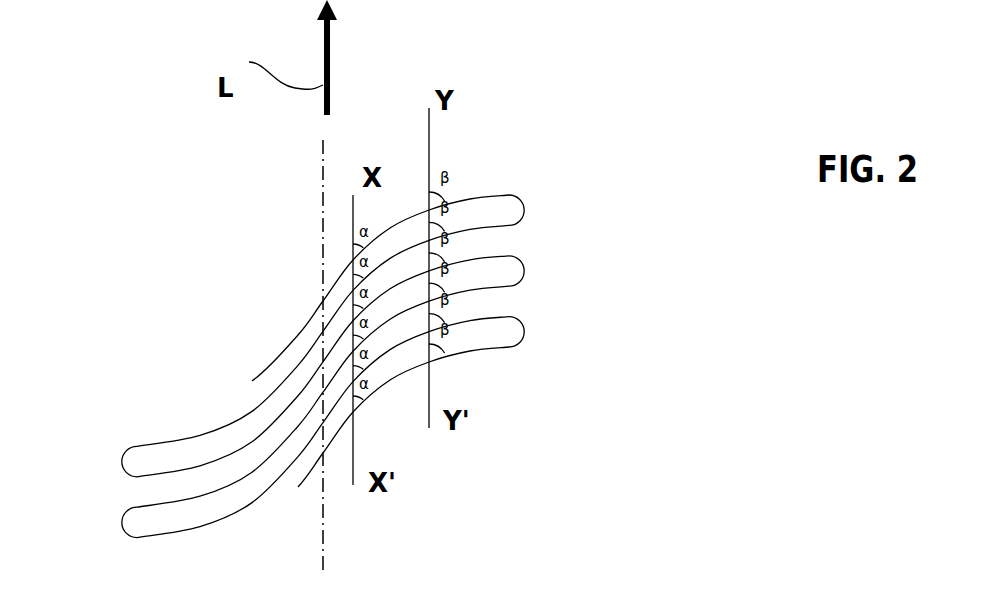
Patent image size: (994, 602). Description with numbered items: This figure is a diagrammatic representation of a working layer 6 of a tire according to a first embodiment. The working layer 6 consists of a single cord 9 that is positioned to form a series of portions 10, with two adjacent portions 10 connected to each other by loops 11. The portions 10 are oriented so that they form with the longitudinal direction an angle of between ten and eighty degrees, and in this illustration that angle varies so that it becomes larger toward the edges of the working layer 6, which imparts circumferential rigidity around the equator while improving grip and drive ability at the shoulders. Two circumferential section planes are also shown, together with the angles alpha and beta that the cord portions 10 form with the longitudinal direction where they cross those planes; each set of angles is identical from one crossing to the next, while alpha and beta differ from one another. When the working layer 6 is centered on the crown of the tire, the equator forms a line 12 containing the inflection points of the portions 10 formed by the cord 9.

The working layer 6 is at (370, 334).
The cord 9 is at (290, 324).
The portions 10 is at (237, 413).
The loops 11 is at (118, 458).
The line 12 is at (320, 238).